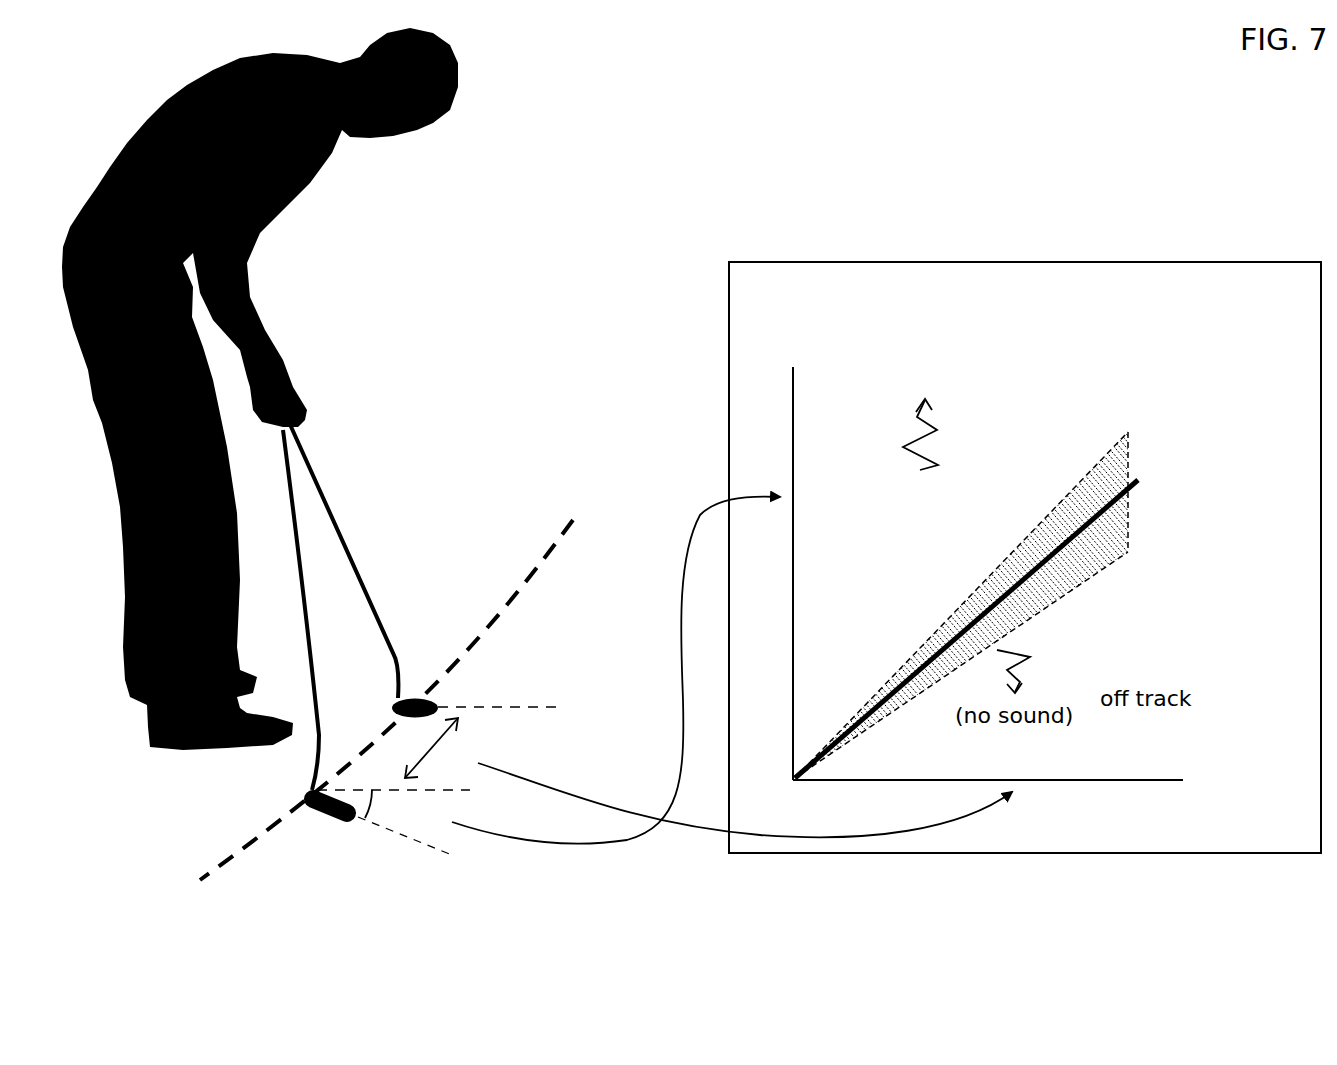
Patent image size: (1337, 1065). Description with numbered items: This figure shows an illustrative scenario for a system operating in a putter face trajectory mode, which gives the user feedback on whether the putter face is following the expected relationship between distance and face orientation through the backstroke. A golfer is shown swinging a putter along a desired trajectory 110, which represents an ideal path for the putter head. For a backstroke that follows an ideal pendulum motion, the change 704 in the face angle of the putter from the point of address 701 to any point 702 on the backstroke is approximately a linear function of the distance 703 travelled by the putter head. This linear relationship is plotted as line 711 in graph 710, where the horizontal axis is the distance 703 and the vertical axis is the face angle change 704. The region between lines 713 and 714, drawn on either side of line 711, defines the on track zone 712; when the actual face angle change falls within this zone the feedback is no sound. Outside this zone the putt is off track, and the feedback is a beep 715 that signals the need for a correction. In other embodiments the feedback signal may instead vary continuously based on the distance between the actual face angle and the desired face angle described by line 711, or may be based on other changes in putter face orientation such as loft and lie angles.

The desired trajectory 110 is at (520, 592).
The point of address 701 is at (413, 700).
The point on the backstroke 702 is at (327, 815).
The distance travelled by the putter head 703 is at (478, 742).
The change in the face angle of the putter 704 is at (437, 823).
The graph 710 is at (1022, 262).
The line 711 is at (1140, 480).
The on-track tolerance band 712 is at (1097, 478).
The line 713 is at (1052, 503).
The line 714 is at (1058, 608).
The beep 715 is at (972, 370).